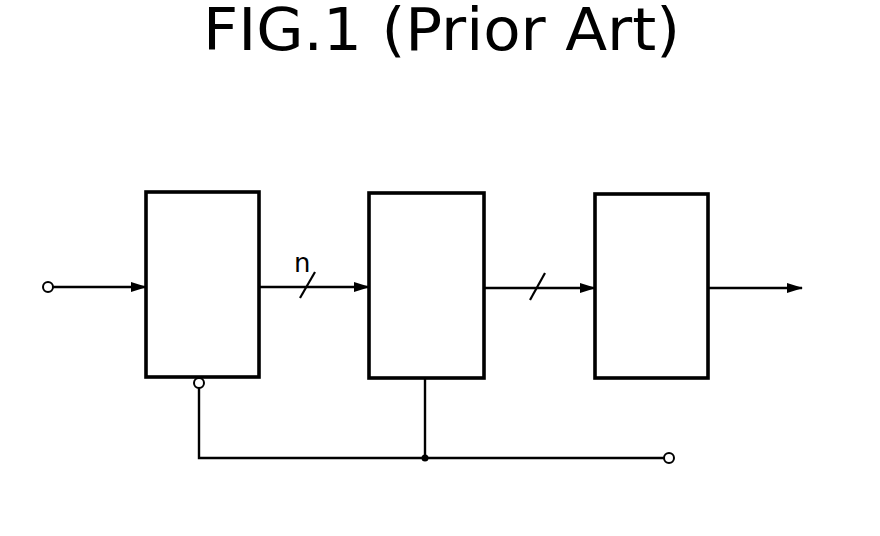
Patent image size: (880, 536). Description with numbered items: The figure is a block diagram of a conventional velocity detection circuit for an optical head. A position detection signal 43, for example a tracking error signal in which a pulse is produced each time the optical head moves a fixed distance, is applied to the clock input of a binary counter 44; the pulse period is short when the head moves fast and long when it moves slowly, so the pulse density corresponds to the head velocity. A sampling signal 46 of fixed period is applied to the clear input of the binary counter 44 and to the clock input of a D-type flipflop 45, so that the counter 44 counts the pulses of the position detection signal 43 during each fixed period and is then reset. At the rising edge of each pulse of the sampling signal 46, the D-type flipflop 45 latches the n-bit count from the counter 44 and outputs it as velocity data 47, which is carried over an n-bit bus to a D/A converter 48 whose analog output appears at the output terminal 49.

The position detection signal 43 is at (51, 293).
The binary counter 44 is at (216, 192).
The D-type flipflop 45 is at (440, 193).
The sampling signal 46 is at (674, 462).
The velocity data 47 is at (539, 302).
The D/A converter 48 is at (655, 194).
The analog output terminal 49 is at (735, 291).